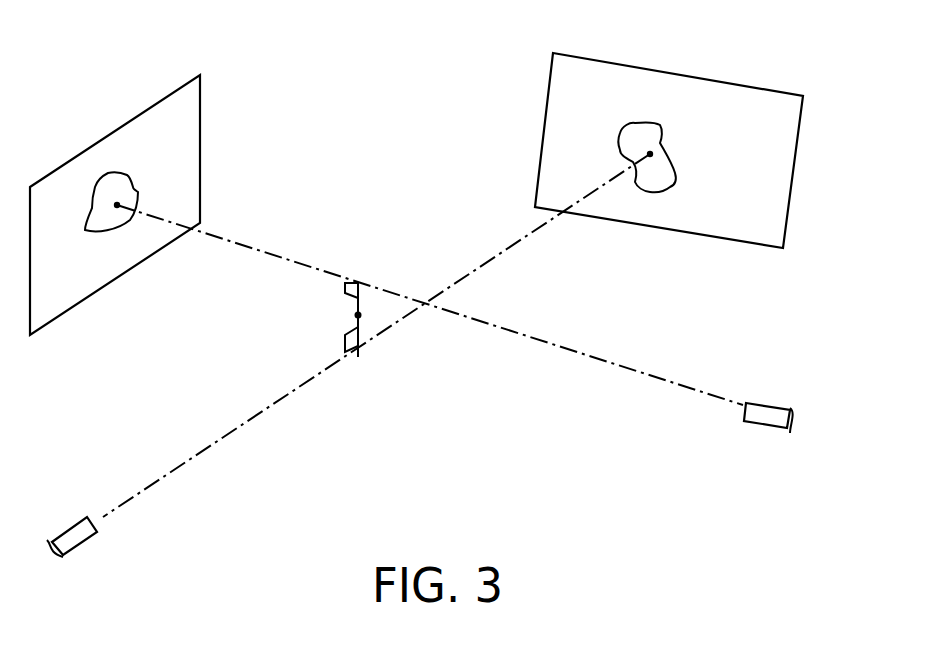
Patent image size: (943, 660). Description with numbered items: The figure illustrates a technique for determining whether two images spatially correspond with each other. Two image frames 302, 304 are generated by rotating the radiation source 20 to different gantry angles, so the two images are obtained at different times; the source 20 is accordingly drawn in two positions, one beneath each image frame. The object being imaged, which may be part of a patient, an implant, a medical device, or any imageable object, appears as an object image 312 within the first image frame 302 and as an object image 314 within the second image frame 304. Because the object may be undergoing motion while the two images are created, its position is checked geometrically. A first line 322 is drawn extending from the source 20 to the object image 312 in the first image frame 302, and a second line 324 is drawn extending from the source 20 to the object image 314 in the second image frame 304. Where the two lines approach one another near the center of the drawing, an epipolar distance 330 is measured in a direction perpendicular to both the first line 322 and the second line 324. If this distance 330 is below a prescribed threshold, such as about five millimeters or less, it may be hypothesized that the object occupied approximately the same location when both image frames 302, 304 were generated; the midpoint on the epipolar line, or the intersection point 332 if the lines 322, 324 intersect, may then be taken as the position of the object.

The first image frame 302 is at (140, 113).
The second image frame 304 is at (752, 85).
The object image 312 is at (137, 190).
The object image 314 is at (677, 170).
The epipolar distance 330 is at (355, 303).
The intersection point 332 is at (358, 315).
The first line 322 is at (622, 367).
The second line 324 is at (207, 452).
The radiation source 20 is at (73, 525).